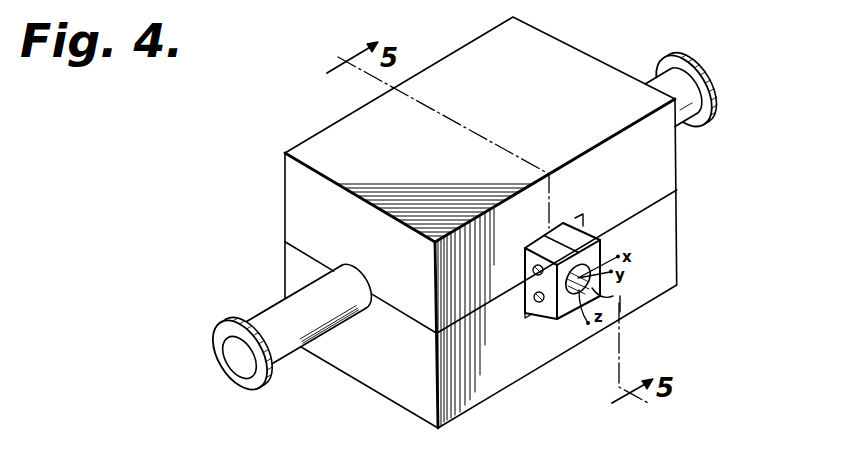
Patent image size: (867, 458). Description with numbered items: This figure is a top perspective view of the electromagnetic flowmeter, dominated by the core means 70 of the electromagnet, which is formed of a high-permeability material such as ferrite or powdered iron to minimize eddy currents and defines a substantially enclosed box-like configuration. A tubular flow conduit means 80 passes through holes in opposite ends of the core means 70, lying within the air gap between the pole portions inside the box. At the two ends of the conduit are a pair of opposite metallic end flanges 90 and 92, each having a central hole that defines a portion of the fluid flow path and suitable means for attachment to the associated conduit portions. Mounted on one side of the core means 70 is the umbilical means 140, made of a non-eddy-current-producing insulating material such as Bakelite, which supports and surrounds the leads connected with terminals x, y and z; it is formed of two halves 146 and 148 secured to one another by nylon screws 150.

The core means 70 is at (534, 27).
The tubular flow conduit means 80 is at (262, 308).
The metallic end flange 90 is at (254, 391).
The metallic end flange 92 is at (716, 108).
The umbilical means 140 is at (607, 251).
The umbilical half 146 is at (571, 306).
The umbilical half 148 is at (613, 296).
The nylon screws 150 is at (534, 296).